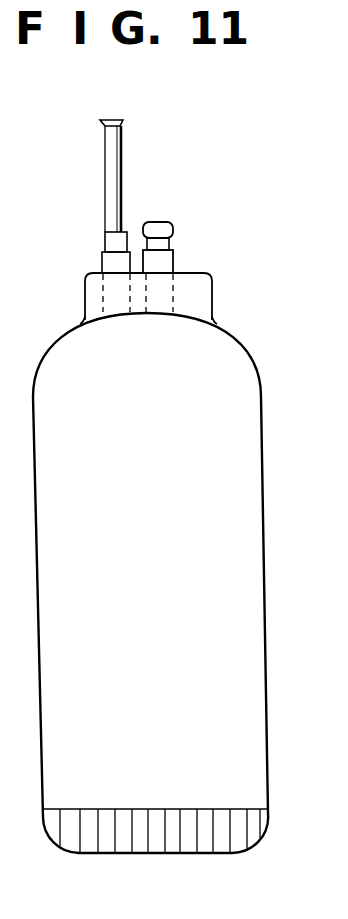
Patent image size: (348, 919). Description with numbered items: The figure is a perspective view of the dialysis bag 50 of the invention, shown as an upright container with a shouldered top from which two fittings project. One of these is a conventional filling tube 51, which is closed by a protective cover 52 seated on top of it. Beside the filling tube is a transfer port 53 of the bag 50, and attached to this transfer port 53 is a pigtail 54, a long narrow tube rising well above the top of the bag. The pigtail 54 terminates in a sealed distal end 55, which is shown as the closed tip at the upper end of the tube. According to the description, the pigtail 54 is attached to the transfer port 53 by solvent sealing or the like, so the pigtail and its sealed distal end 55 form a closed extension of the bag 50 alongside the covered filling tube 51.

The dialysis bag 50 is at (248, 617).
The filling tube 51 is at (174, 264).
The protective cover 52 is at (161, 222).
The transfer port 53 is at (102, 265).
The pigtail 54 is at (118, 163).
The sealed distal end 55 is at (110, 120).